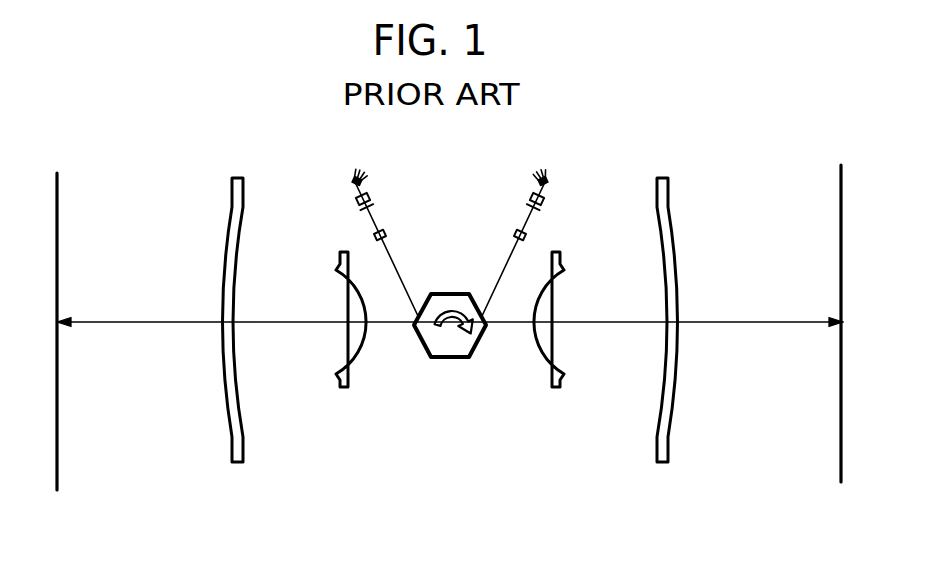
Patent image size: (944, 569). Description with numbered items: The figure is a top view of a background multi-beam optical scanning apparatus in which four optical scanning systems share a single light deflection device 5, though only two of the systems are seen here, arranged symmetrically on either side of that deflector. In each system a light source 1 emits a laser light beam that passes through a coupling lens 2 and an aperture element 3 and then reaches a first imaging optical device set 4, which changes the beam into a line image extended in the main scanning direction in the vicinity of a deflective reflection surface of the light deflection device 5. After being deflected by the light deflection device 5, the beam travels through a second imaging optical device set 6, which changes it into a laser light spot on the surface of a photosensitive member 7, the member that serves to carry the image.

The light source 1 is at (362, 181).
The coupling lens 2 is at (355, 198).
The aperture element 3 is at (366, 207).
The first imaging optical device set 4 is at (386, 236).
The light deflection device 5 is at (452, 358).
The second imaging optical device set 6 is at (358, 398).
The photosensitive member 7 is at (58, 210).